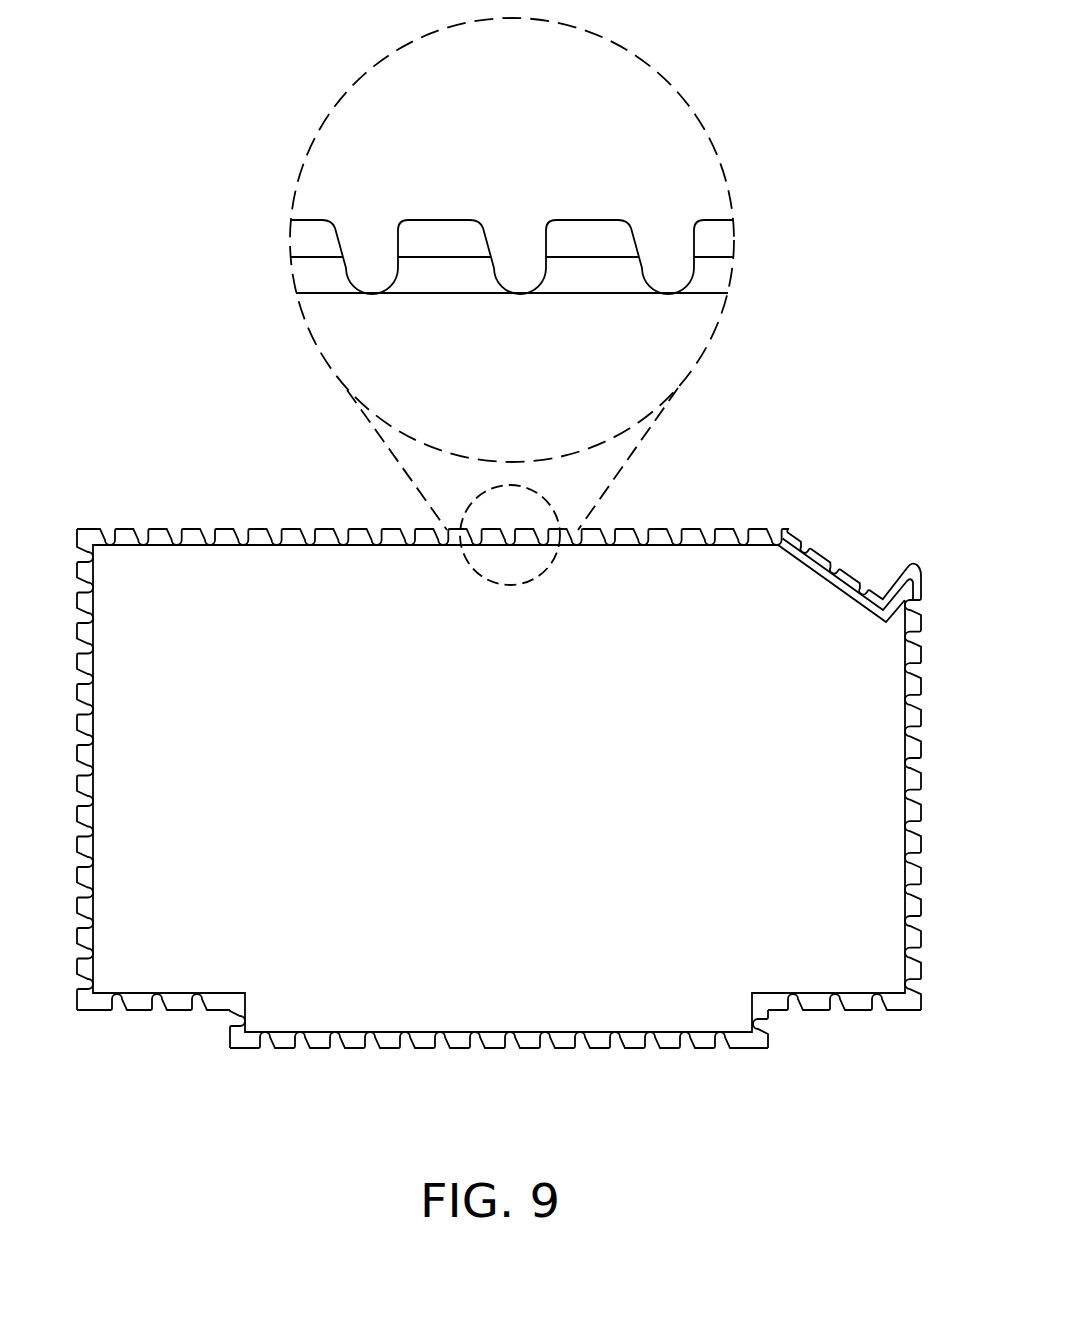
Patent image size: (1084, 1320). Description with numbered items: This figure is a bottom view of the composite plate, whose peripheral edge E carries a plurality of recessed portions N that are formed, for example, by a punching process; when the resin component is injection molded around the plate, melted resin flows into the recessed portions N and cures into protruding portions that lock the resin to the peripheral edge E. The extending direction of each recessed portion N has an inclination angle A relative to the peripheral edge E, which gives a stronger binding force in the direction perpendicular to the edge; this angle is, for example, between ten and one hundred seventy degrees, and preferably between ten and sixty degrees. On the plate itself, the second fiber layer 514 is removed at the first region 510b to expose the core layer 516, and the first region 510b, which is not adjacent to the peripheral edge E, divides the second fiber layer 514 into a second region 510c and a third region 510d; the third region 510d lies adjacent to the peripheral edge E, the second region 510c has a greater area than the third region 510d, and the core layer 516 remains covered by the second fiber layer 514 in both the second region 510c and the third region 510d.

The third region 510d is at (743, 220).
The first region 510b is at (743, 258).
The second region 510c is at (743, 295).
The second fiber layer 514 is at (595, 233).
The core layer 516 is at (608, 273).
The inclination angle A is at (334, 232).
The peripheral edge E is at (432, 220).
The recessed portions N is at (372, 294).